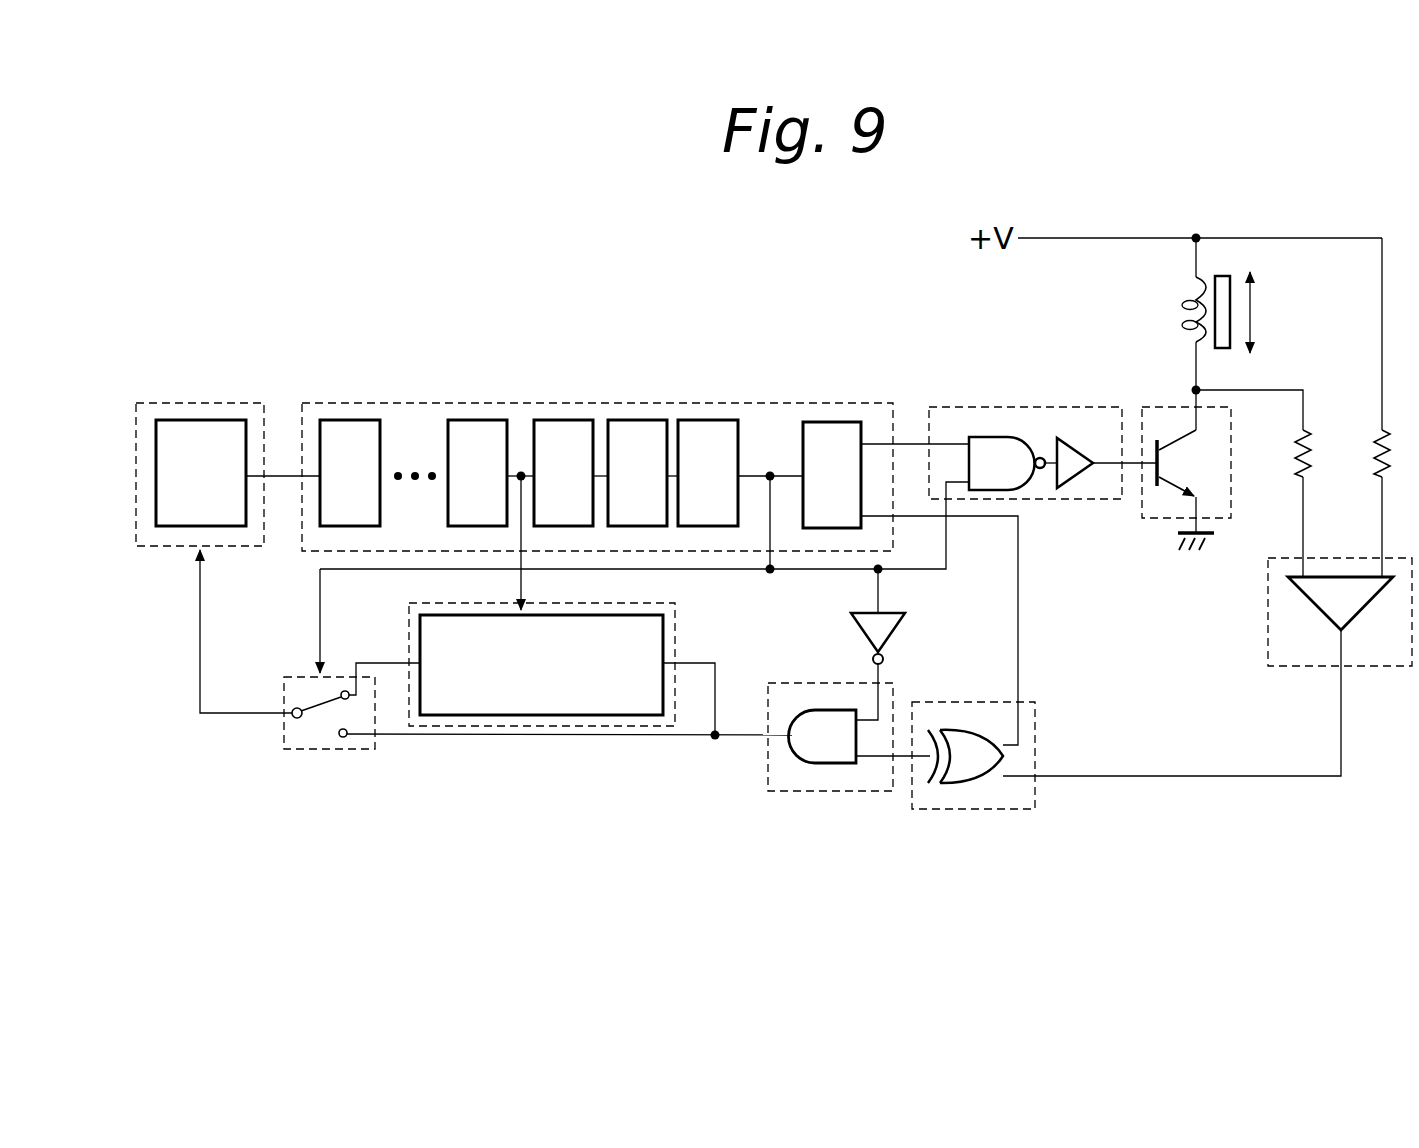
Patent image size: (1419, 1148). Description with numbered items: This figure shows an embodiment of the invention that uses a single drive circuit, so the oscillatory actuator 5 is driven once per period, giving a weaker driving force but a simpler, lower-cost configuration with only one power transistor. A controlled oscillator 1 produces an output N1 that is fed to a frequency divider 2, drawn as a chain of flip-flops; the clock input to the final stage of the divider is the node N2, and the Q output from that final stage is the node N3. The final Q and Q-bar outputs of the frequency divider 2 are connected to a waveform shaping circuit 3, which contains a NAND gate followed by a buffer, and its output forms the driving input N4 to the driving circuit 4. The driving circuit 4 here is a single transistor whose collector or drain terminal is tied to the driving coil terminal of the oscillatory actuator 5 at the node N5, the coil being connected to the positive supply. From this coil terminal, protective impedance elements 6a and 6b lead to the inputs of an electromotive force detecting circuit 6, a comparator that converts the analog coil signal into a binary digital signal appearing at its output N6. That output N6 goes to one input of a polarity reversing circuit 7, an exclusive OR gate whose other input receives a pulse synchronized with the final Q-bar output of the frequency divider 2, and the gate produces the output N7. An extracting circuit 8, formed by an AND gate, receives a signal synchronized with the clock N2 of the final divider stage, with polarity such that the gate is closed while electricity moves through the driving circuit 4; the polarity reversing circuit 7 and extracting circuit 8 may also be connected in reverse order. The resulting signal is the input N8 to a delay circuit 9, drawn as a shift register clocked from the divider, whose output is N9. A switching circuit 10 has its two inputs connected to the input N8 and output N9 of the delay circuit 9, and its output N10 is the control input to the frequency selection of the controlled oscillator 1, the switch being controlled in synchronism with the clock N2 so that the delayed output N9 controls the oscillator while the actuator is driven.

The controlled oscillator 1 is at (190, 412).
The frequency divider 2 is at (478, 410).
The waveform shaping circuit 3 is at (948, 417).
The driving circuit 4 is at (1162, 412).
The oscillatory actuator 5 is at (1231, 312).
The electromotive force detecting circuit 6 is at (1277, 616).
The protective impedance element 6a is at (1277, 503).
The protective impedance element 6b is at (1355, 453).
The polarity reversing circuit 7 is at (1030, 745).
The extracting circuit 8 is at (817, 700).
The delay circuit 9 is at (637, 706).
The switching circuit 10 is at (325, 740).
The output from the controlled oscillator N1 is at (286, 462).
The clock input to the final stage of the frequency divider N2 is at (916, 580).
The Q output from the final stage of the frequency divider N3 is at (912, 440).
The driving input to the driving circuit N4 is at (1040, 453).
The connection between the driving coil terminal and the transistor terminal N5 is at (1266, 386).
The output from the electromotive force detecting circuit N6 is at (1322, 780).
The output from the polarity reversing circuit N7 is at (903, 766).
The input to the delay circuit N8 is at (740, 750).
The output from the delay circuit N9 is at (393, 657).
The output from the switching circuit N10 is at (245, 720).